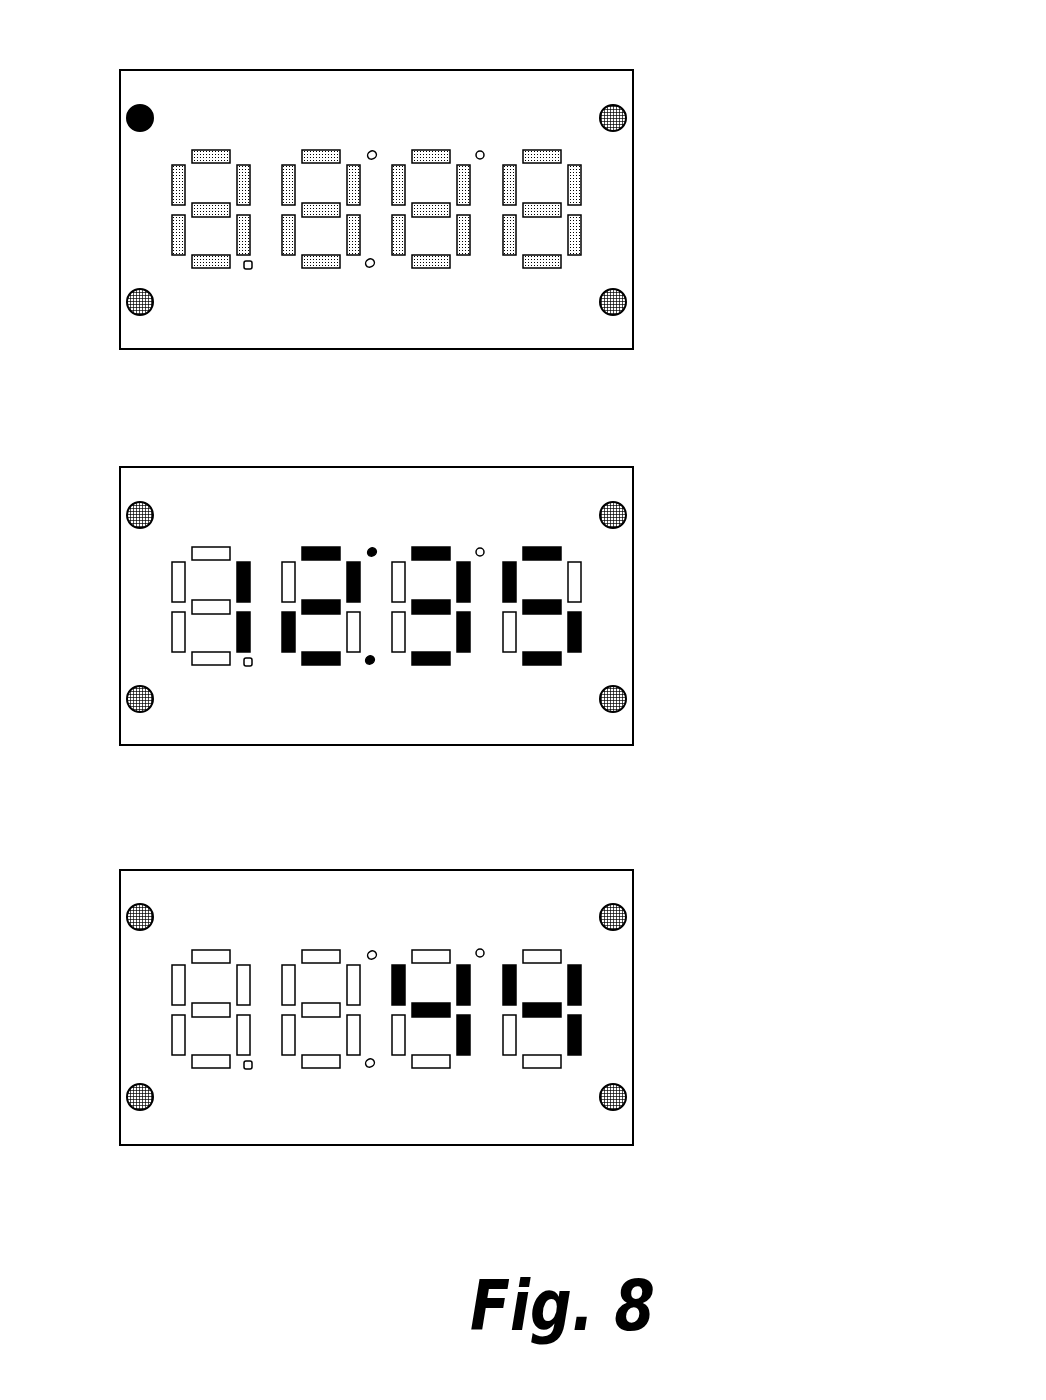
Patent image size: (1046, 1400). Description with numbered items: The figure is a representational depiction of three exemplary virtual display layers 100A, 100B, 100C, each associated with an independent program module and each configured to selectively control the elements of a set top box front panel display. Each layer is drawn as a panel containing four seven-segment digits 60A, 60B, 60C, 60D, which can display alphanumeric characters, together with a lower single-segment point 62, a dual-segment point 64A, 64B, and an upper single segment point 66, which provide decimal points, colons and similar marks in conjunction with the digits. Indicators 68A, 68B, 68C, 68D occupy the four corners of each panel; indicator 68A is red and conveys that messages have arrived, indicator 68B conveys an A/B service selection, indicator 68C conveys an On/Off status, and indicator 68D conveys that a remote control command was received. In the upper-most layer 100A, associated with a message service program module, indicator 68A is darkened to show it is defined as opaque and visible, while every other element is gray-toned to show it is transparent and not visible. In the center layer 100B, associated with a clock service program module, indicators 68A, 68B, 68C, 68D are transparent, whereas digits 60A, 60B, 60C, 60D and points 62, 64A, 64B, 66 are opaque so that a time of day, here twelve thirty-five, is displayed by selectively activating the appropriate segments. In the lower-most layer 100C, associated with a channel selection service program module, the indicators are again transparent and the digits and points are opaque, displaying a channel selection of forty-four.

The upper-most layer 100A is at (593, 50).
The center layer 100B is at (593, 448).
The lower-most layer 100C is at (593, 850).
The seven-segment digit 60A is at (218, 305).
The seven-segment digit 60B is at (318, 305).
The seven-segment digit 60C is at (420, 305).
The seven-segment digit 60D is at (525, 305).
The lower single-segment point 62 is at (257, 253).
The dual-segment point 64A is at (375, 137).
The dual-segment point 64B is at (373, 255).
The upper single segment point 66 is at (485, 137).
The indicator 68A is at (137, 104).
The indicator 68B is at (617, 107).
The indicator 68C is at (138, 289).
The indicator 68D is at (619, 300).